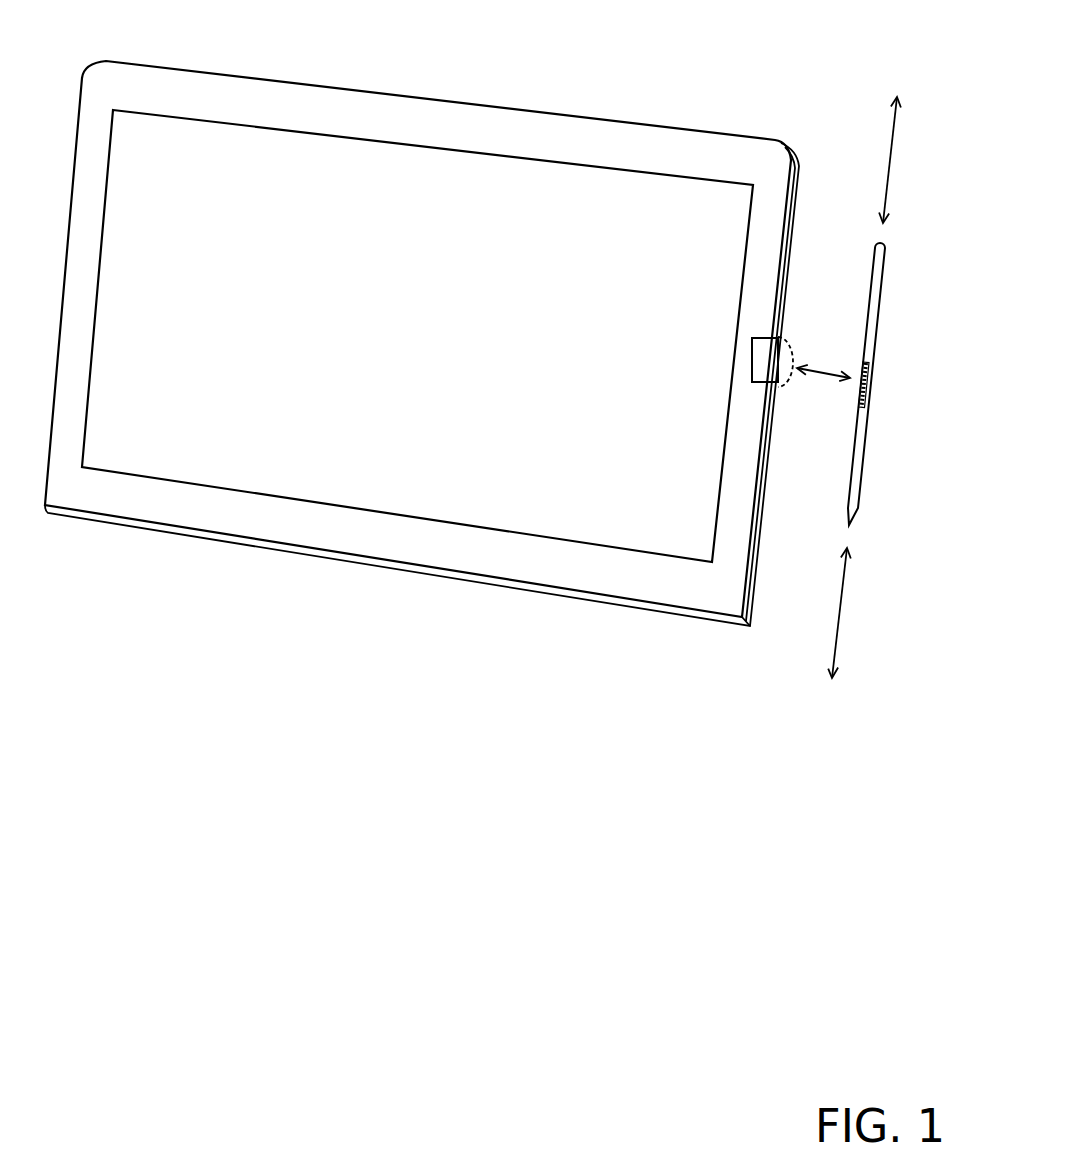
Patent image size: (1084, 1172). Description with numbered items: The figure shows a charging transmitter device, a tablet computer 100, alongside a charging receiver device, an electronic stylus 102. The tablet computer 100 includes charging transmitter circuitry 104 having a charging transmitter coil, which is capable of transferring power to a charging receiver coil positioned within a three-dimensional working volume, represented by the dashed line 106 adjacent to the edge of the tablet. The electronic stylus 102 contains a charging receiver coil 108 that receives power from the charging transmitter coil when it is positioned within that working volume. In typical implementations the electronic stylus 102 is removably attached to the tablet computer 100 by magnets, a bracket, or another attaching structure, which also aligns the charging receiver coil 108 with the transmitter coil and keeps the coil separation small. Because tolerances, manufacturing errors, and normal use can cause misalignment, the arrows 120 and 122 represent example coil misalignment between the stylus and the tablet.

The tablet computer 100 is at (440, 99).
The electronic stylus 102 is at (858, 510).
The charging transmitter circuitry 104 is at (765, 360).
The dashed line representing three-dimensional working volume 106 is at (800, 315).
The charging receiver coil 108 is at (868, 405).
The arrow representing coil misalignment 120 is at (832, 88).
The arrow representing coil misalignment 122 is at (878, 702).